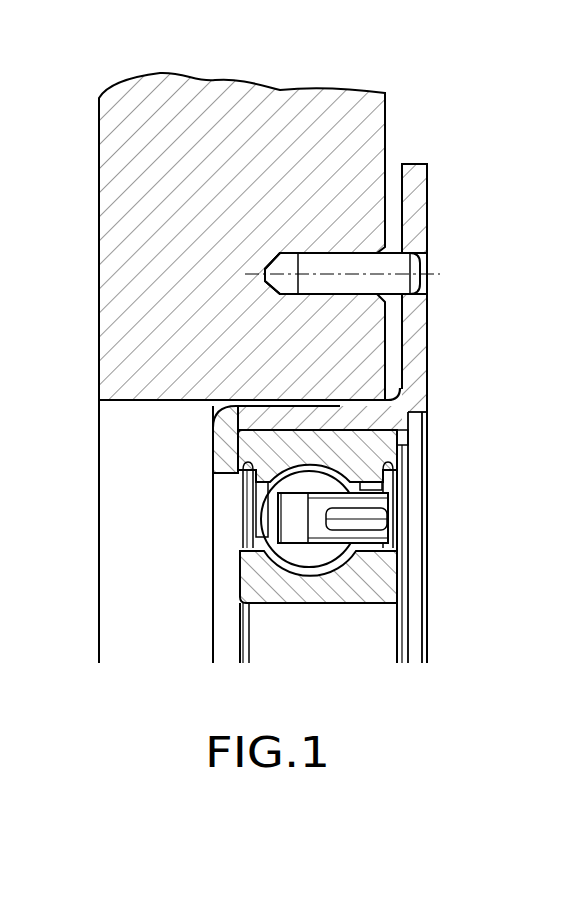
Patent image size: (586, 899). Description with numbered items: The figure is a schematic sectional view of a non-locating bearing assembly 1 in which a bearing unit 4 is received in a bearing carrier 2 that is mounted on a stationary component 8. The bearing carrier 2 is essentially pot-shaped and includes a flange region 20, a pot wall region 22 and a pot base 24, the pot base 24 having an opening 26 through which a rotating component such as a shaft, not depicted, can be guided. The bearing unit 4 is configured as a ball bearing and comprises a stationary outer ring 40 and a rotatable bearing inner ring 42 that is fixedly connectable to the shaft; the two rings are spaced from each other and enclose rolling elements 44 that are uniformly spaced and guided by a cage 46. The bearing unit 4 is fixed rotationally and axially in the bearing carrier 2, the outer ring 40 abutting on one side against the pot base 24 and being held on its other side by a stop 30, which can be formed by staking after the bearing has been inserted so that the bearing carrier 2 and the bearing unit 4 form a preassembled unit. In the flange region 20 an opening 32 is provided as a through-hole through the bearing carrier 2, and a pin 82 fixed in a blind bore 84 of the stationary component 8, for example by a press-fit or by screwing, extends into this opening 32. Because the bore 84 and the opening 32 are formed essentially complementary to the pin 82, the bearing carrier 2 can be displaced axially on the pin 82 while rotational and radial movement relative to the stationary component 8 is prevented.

The non-locating bearing assembly 1 is at (260, 45).
The bearing carrier 2 is at (417, 345).
The bearing unit 4 is at (374, 582).
The stationary component 8 is at (113, 132).
The flange region 20 is at (415, 197).
The pot wall region 22 is at (325, 415).
The pot base 24 is at (228, 463).
The opening 26 is at (228, 582).
The stop 30 is at (405, 432).
The opening 32 is at (425, 253).
The outer ring 40 is at (377, 450).
The bearing inner ring 42 is at (336, 598).
The rolling elements 44 is at (326, 560).
The cage 46 is at (372, 497).
The pin 82 is at (333, 265).
The blind bore 84 is at (277, 265).